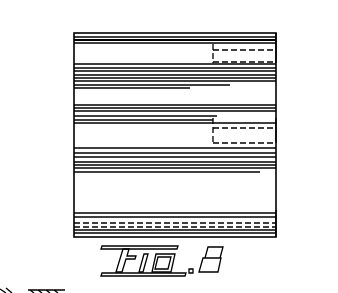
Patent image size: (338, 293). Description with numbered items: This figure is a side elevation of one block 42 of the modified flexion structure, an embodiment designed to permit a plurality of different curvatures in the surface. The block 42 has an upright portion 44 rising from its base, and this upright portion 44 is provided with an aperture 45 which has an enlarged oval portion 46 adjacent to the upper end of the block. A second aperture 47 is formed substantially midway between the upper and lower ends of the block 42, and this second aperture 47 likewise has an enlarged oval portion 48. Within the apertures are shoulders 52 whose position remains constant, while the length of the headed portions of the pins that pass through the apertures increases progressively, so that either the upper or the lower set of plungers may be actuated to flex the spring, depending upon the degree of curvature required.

The block 42 is at (242, 219).
The upright portion 44 is at (175, 135).
The aperture 45 is at (258, 50).
The enlarged oval portion 46 is at (139, 43).
The second aperture 47 is at (258, 128).
The enlarged oval portion 48 is at (96, 152).
The shoulders 52 is at (214, 49).